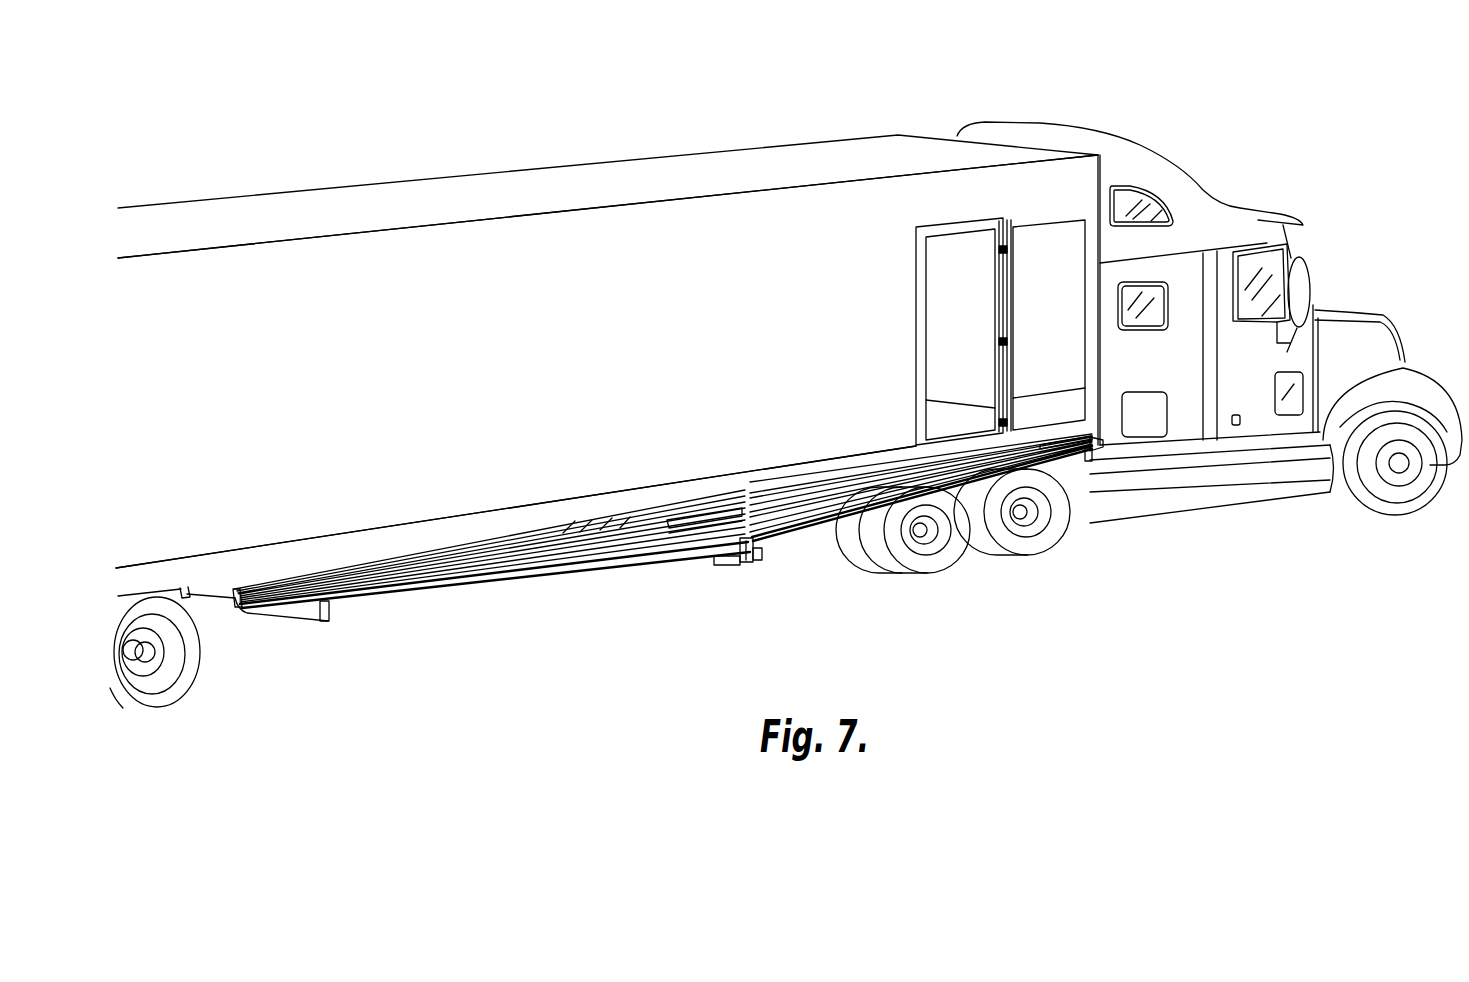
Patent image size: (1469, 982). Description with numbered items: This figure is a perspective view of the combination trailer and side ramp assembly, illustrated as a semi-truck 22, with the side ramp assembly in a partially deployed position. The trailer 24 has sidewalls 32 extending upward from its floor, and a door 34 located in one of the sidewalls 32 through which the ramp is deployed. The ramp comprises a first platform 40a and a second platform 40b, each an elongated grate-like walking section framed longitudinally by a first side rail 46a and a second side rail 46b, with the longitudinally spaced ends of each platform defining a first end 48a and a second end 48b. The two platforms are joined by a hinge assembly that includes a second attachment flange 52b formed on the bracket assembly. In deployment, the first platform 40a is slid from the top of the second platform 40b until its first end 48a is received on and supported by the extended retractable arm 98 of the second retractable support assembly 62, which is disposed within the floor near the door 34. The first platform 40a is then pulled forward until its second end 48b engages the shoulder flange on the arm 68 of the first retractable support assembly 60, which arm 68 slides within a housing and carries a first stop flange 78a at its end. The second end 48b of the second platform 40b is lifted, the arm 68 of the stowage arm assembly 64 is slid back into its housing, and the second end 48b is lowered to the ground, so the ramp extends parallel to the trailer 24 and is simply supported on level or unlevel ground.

The semi-truck 22 is at (1174, 136).
The trailer 24 is at (524, 167).
The sidewalls 32 is at (287, 268).
The door 34 is at (972, 213).
The first platform 40a is at (845, 458).
The second platform 40b is at (420, 548).
The first side rail 46a is at (320, 580).
The second side rail 46b is at (408, 592).
The first end 48a is at (672, 525).
The second end 48b is at (695, 527).
The second attachment flange 52b is at (736, 564).
The first retractable support assembly 60 is at (731, 570).
The second retractable support assembly 62 is at (1083, 468).
The stowage arm assembly 64 is at (197, 606).
The arm 68 is at (247, 612).
The first stop flange 78a is at (753, 558).
The retractable arm 98 is at (1092, 463).